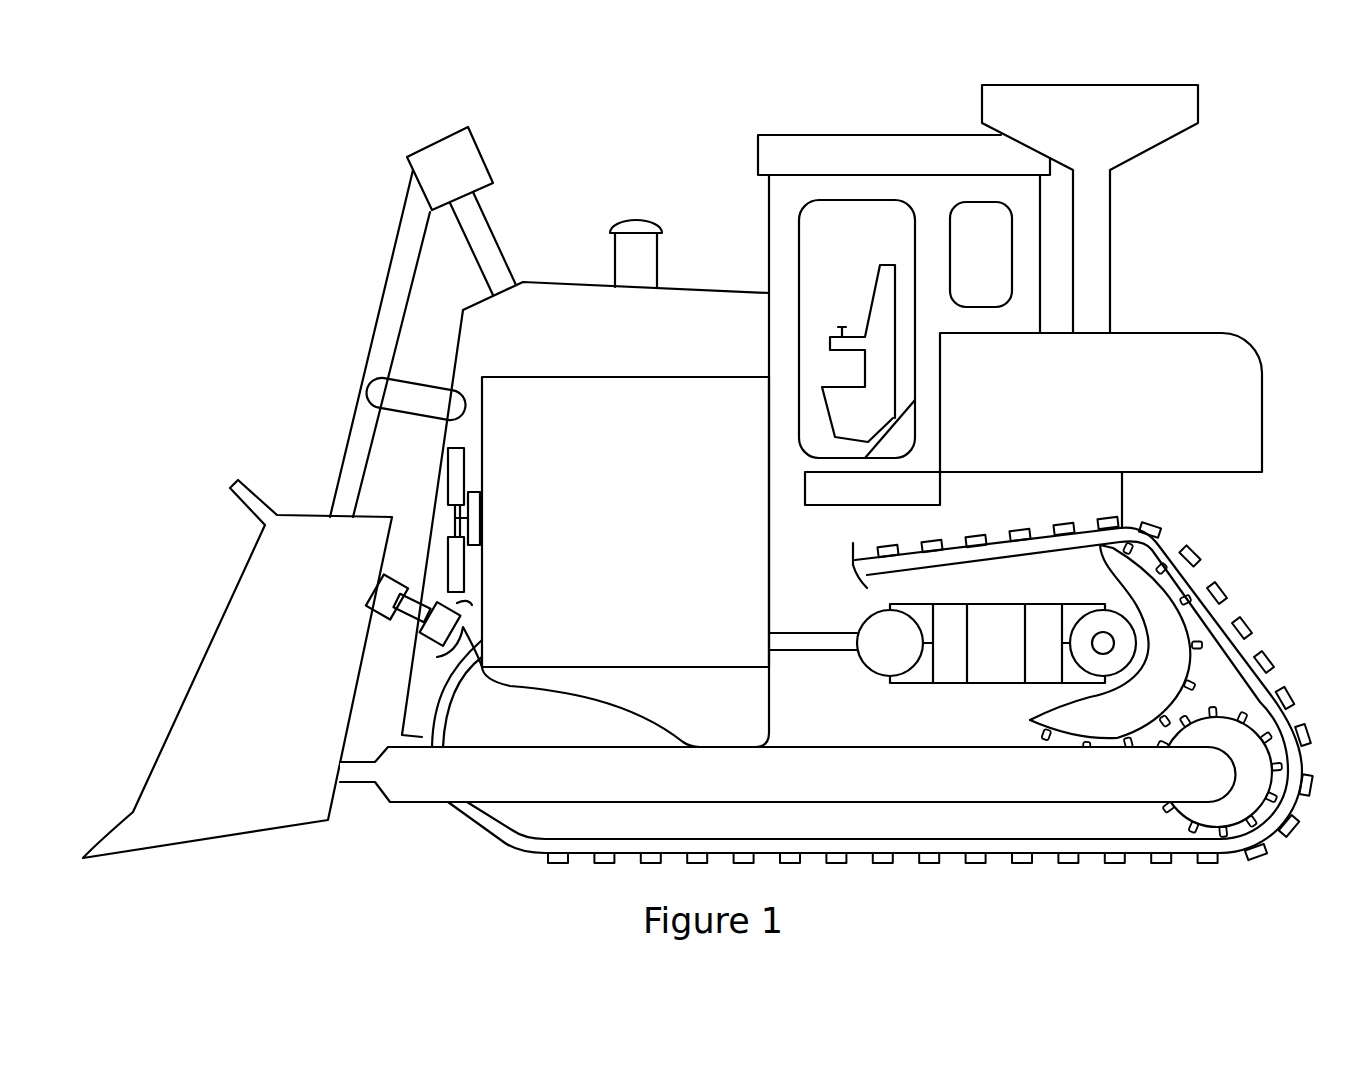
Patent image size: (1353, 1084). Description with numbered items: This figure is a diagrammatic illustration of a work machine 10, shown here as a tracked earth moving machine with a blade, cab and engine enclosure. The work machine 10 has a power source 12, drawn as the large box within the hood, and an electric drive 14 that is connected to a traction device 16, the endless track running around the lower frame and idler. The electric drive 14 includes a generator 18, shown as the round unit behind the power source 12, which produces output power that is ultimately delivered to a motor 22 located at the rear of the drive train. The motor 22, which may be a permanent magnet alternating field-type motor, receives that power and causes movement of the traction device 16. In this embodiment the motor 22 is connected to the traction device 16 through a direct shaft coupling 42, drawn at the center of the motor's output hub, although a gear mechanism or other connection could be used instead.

The work machine 10 is at (698, 490).
The power source 12 is at (631, 533).
The electric drive 14 is at (902, 727).
The traction device 16 is at (1180, 535).
The generator 18 is at (902, 656).
The motor 22 is at (1110, 608).
The direct shaft coupling 42 is at (1105, 641).